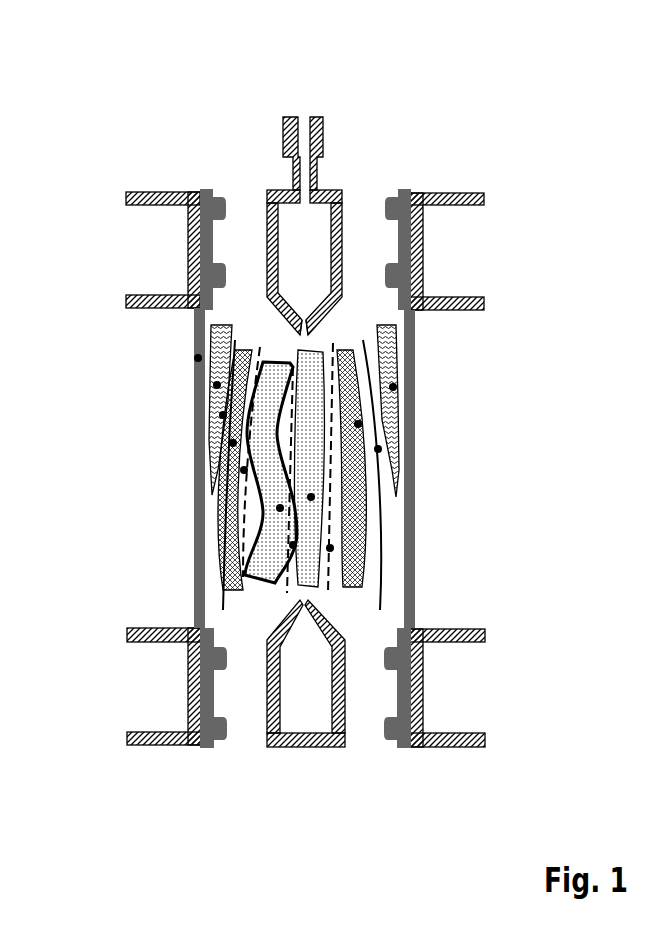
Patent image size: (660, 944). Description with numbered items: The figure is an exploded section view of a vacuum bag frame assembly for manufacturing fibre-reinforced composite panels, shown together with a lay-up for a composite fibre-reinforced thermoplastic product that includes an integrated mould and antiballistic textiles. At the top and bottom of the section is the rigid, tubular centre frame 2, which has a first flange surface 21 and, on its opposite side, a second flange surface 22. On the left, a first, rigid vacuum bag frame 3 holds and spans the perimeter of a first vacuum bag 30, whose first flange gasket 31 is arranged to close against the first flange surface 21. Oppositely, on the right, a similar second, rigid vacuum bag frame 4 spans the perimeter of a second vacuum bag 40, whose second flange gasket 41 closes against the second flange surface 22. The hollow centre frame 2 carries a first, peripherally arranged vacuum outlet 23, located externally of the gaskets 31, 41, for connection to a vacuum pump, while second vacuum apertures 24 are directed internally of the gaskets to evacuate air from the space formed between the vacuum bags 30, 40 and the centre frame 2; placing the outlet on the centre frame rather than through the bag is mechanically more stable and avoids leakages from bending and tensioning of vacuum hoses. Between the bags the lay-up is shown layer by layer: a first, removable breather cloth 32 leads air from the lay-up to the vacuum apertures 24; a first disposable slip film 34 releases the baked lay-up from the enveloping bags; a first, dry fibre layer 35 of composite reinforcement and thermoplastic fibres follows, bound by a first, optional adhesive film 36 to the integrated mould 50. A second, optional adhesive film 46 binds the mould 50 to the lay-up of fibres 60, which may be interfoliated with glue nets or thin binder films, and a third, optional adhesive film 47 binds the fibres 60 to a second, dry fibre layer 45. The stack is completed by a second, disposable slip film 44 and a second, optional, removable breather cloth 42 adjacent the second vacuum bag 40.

The tubular centre frame 2 is at (293, 419).
The first flange surface 21 is at (237, 231).
The second flange surface 22 is at (345, 237).
The first, peripherally arranged vacuum outlet 23 is at (305, 113).
The second vacuum aperture 24 is at (305, 317).
The first rigid vacuum bag frame 3 is at (143, 193).
The first vacuum bag 30 is at (198, 358).
The first flange gasket 31 is at (267, 222).
The first removable breather cloth 32 is at (217, 385).
The first disposable slip film 34 is at (223, 415).
The first dry fibre layer 35 is at (233, 443).
The first optional adhesive film 36 is at (178, 472).
The second rigid vacuum bag frame 4 is at (470, 193).
The second vacuum bag 40 is at (415, 358).
The second flange gasket 41 is at (382, 193).
The second optional removable breather cloth 42 is at (393, 387).
The second disposable slip film 44 is at (378, 449).
The second dry fibre layer 45 is at (358, 424).
The second optional adhesive film 46 is at (293, 545).
The third optional adhesive film 47 is at (330, 548).
The integrated mould 50 is at (280, 508).
The lay-up of fibres 60 is at (311, 497).